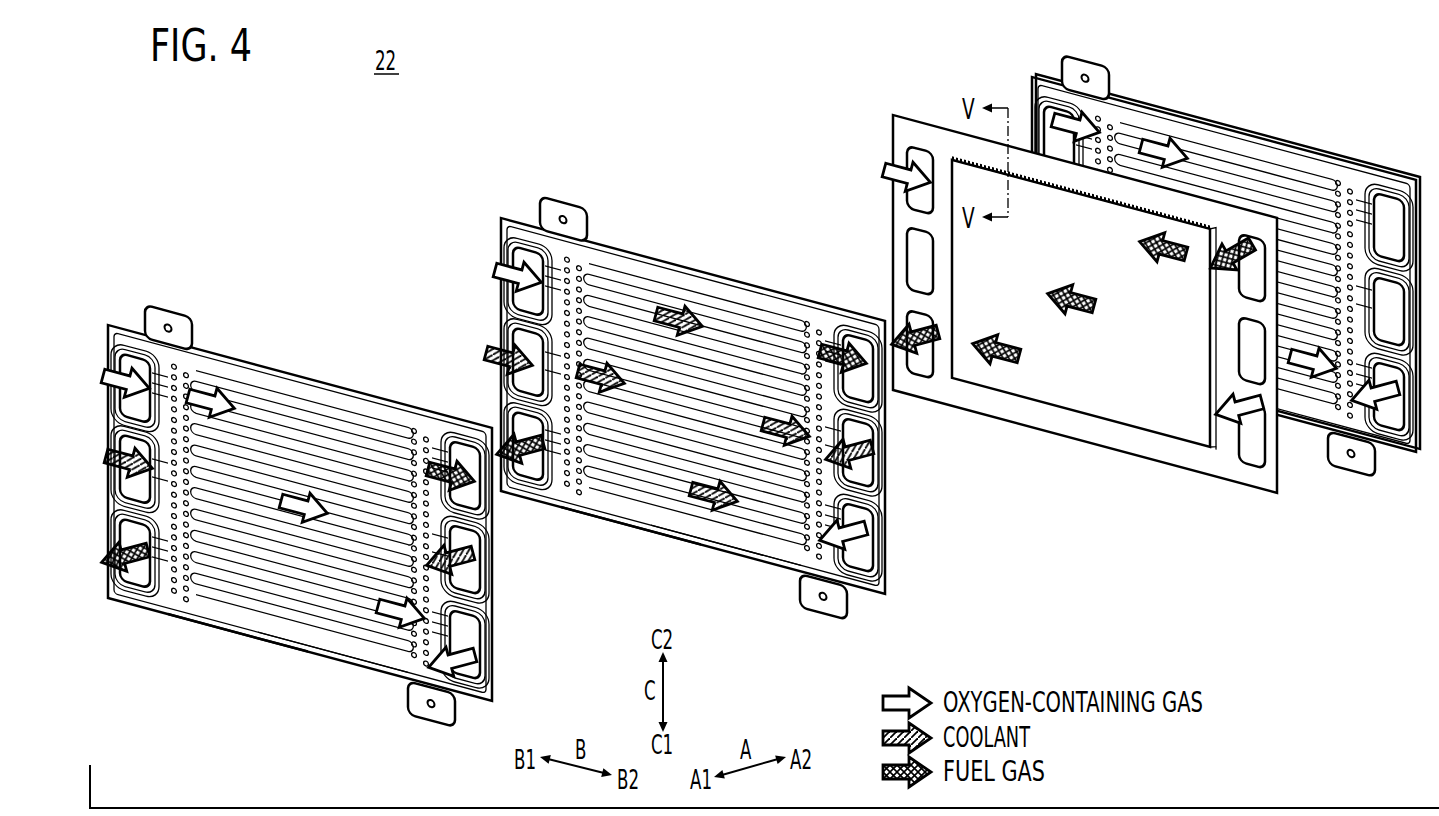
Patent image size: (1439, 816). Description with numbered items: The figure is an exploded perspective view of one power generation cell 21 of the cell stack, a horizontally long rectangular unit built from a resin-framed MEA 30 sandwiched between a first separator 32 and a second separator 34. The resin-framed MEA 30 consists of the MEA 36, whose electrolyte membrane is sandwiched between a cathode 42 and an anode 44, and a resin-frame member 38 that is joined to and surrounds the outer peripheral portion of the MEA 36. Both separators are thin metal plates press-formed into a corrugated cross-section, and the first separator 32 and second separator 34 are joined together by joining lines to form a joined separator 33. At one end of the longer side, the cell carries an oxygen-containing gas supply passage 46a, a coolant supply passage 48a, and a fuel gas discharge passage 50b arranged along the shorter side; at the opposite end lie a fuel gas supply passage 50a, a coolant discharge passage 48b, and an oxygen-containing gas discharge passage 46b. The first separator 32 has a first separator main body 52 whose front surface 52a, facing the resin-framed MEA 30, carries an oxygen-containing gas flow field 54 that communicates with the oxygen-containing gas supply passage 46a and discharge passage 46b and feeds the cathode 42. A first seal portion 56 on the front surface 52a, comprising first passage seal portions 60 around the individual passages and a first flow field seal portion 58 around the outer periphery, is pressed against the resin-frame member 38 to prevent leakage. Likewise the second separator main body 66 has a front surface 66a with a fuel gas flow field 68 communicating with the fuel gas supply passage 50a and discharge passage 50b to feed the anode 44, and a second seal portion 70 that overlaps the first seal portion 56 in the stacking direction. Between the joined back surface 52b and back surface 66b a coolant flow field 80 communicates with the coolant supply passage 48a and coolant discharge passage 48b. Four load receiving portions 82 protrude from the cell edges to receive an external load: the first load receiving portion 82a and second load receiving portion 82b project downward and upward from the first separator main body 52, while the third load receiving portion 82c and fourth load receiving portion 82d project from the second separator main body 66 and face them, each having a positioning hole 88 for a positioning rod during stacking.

The power generation cell 21 is at (749, 124).
The resin-framed MEA 30 is at (816, 50).
The first separator 32 is at (108, 318).
The joined separator 33 is at (957, 15).
The second separator 34 is at (502, 211).
The MEA 36 is at (950, 150).
The resin-frame member 38 is at (890, 127).
The cathode 42 is at (1225, 440).
The anode 44 is at (1040, 385).
The oxygen-containing gas supply passage 46a is at (1062, 146).
The oxygen-containing gas discharge passage 46b is at (1395, 420).
The coolant supply passage 48a is at (915, 245).
The coolant discharge passage 48b is at (1385, 313).
The fuel gas supply passage 50a is at (1390, 239).
The fuel gas discharge passage 50b is at (920, 366).
The first separator main body 52 is at (762, 348).
The front surface 52a is at (261, 636).
The back surface 52b is at (298, 646).
The oxygen-containing gas flow field 54 is at (1255, 170).
The first seal portion 56 is at (1299, 146).
The first flow field seal portion 58 is at (1318, 418).
The first passage seal portions 60 is at (486, 528).
The second separator main body 66 is at (693, 378).
The front surface 66a is at (706, 541).
The back surface 66b is at (625, 521).
The fuel gas flow field 68 is at (722, 312).
The second seal portion 70 is at (769, 293).
The coolant flow field 80 is at (672, 300).
The load receiving portions 82 is at (1380, 472).
The first load receiving portion 82a is at (423, 726).
The second load receiving portion 82b is at (186, 303).
The third load receiving portion 82c is at (811, 618).
The fourth load receiving portion 82d is at (578, 200).
The positioning hole 88 is at (818, 601).